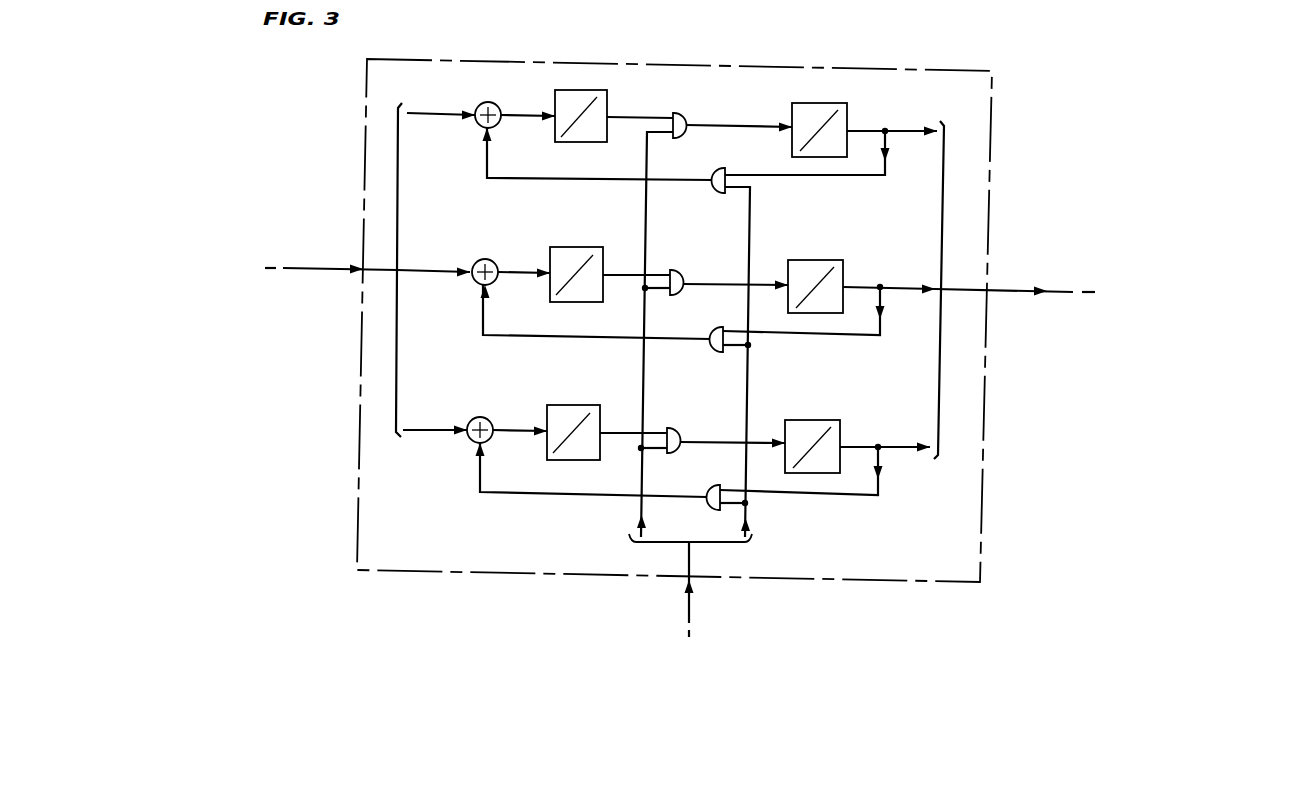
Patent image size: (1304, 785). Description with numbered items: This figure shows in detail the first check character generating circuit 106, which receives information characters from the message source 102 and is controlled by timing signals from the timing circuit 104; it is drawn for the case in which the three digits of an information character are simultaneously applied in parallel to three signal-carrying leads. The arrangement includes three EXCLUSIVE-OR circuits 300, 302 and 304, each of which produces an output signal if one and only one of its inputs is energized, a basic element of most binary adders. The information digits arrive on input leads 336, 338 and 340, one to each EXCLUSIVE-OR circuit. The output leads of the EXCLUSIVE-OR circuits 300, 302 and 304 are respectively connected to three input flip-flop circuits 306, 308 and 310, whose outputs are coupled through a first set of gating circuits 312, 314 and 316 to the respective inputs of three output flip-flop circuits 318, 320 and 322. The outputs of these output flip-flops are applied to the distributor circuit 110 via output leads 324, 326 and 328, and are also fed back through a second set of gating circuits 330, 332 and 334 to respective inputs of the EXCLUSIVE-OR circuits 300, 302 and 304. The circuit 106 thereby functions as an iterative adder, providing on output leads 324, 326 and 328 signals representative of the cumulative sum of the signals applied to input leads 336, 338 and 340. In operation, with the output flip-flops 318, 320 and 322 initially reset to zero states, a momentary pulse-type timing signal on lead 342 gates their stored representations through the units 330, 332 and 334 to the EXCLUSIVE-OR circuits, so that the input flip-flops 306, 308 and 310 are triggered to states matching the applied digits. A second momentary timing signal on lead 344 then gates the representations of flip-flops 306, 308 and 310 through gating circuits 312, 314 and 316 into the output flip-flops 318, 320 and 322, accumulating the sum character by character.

The message source 102 is at (334, 259).
The timing circuit 104 is at (690, 609).
The first check character generating circuit 106 is at (670, 66).
The distributor circuit 110 is at (1007, 291).
The EXCLUSIVE-OR circuit 300 is at (493, 103).
The EXCLUSIVE-OR circuit 302 is at (490, 260).
The EXCLUSIVE-OR circuit 304 is at (483, 417).
The input flip-flop circuit 306 is at (590, 91).
The input flip-flop circuit 308 is at (590, 248).
The input flip-flop circuit 310 is at (585, 405).
The gating circuit 312 is at (684, 117).
The gating circuit 314 is at (684, 275).
The gating circuit 316 is at (684, 432).
The output flip-flop circuit 318 is at (827, 103).
The output flip-flop circuit 320 is at (819, 259).
The output flip-flop circuit 322 is at (819, 419).
The output lead 324 is at (927, 131).
The output lead 326 is at (927, 287).
The output lead 328 is at (924, 447).
The gating circuit 330 is at (720, 169).
The gating circuit 332 is at (720, 327).
The gating circuit 334 is at (715, 483).
The input lead 336 is at (452, 111).
The input lead 338 is at (451, 269).
The input lead 340 is at (446, 427).
The lead 342 is at (748, 514).
The lead 344 is at (640, 518).